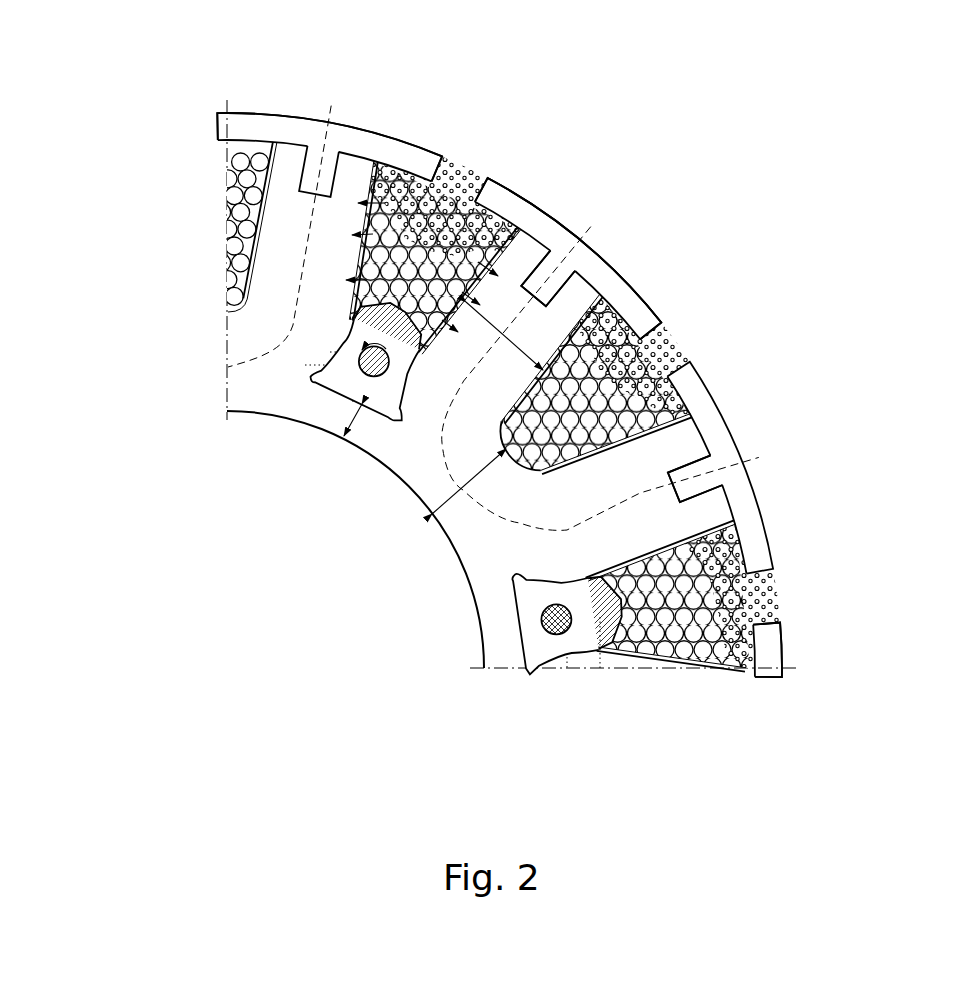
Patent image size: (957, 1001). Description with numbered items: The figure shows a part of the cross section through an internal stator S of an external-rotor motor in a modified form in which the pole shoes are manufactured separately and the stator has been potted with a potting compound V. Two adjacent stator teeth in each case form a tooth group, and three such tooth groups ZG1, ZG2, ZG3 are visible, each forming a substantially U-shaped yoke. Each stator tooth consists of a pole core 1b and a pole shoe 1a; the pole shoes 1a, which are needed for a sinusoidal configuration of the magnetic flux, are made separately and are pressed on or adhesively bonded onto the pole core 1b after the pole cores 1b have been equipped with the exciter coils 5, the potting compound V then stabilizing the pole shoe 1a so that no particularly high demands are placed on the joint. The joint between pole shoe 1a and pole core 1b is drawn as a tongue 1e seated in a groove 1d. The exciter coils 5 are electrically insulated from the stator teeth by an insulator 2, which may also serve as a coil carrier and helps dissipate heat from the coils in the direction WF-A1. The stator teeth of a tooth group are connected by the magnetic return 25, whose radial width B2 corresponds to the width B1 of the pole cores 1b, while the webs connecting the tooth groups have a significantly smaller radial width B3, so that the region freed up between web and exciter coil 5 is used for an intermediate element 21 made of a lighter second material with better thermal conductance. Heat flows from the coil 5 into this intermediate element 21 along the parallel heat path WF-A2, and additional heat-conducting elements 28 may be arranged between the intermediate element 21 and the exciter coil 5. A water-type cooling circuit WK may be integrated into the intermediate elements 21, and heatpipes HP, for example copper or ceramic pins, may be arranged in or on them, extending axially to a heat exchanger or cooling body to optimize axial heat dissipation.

The pole shoe 1a is at (600, 265).
The pole core 1b is at (494, 407).
The groove 1d is at (533, 273).
The tongue 1e is at (547, 282).
The insulator 2 is at (504, 266).
The exciter coil 5 is at (362, 262).
The intermediate element 21 is at (398, 412).
The magnetic return 25 is at (493, 318).
The heat-conducting element 28 is at (380, 320).
The tooth group ZG1 is at (252, 128).
The tooth group ZG2 is at (500, 193).
The tooth group ZG3 is at (775, 662).
The internal stator S is at (703, 195).
The potting compound V is at (453, 207).
The heatpipe HP is at (522, 640).
The water-type cooling circuit WK is at (313, 408).
The heat flow direction WF-A1 is at (372, 224).
The heat flow direction WF-A2 is at (355, 342).
The width of the pole cores B1 is at (504, 336).
The radial width of the magnetic return B2 is at (469, 491).
The radial width of the webs B3 is at (362, 425).